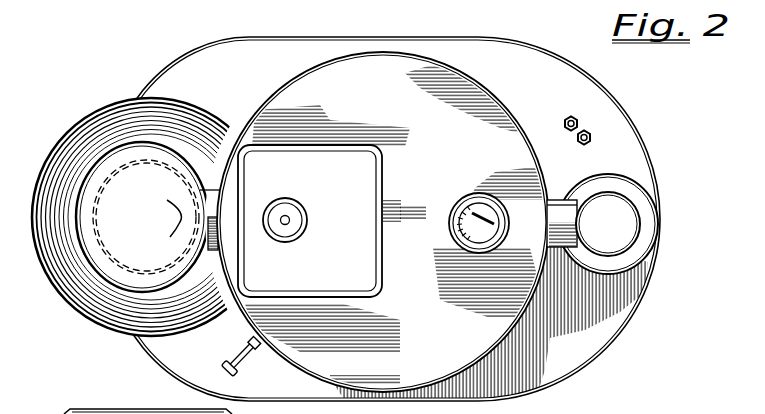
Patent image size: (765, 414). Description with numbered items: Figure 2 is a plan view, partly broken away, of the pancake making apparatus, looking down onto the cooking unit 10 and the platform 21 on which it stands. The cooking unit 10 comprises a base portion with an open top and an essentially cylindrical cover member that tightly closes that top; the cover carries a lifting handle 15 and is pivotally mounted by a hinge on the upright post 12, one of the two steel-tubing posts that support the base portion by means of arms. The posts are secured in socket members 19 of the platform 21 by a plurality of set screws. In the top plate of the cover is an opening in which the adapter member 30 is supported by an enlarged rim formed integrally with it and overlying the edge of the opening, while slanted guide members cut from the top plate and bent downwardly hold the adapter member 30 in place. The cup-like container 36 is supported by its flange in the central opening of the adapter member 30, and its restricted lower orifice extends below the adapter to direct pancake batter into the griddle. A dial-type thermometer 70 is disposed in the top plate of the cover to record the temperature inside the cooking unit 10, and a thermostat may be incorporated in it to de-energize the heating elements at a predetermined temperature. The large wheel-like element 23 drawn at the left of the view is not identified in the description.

The cooking unit 10 is at (506, 92).
The upright post 12 is at (618, 240).
The lifting handle 15 is at (243, 351).
The socket members 19 is at (645, 233).
The platform 21 is at (560, 373).
The cable reel wheel 23 is at (78, 294).
The adapter member 30 is at (357, 272).
The cup-like container 36 is at (292, 228).
The dial-type thermometer 70 is at (487, 237).